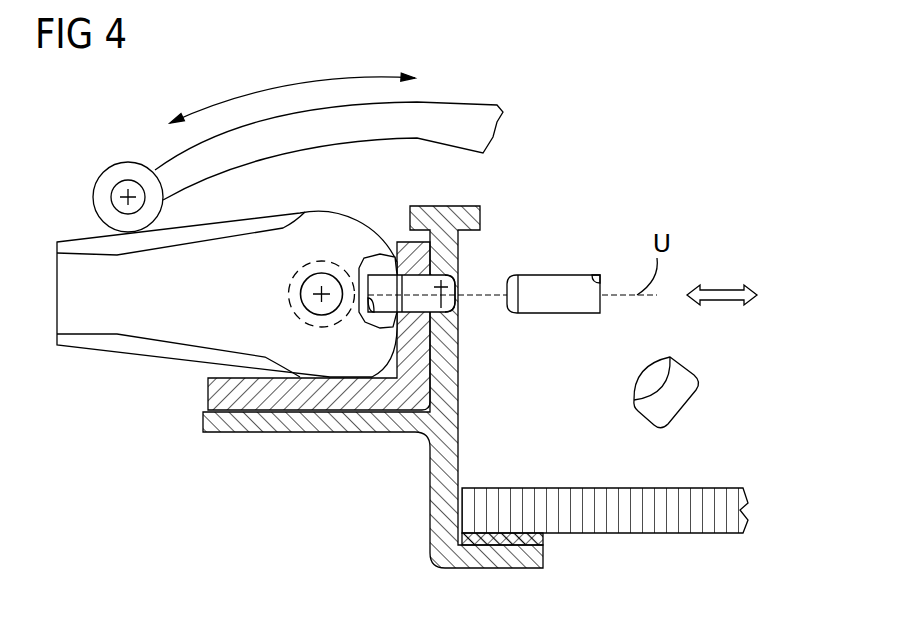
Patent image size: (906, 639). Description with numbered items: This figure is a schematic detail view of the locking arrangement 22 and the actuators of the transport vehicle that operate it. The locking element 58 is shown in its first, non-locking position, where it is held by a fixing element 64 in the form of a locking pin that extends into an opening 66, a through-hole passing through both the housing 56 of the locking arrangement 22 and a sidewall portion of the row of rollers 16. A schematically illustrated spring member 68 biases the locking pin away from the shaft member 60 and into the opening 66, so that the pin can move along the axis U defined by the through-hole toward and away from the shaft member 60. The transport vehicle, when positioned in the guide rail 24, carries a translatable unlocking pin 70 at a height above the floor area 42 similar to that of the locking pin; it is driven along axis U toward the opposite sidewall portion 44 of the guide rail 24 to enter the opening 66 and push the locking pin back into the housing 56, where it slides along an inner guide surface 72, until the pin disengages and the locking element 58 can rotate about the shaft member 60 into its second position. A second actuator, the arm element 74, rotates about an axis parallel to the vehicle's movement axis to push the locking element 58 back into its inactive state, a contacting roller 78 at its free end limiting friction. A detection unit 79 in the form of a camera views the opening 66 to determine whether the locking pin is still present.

The row of rollers 16 is at (450, 367).
The locking arrangement 22 is at (266, 271).
The guide rail 24 is at (632, 497).
The floor area 42 is at (665, 520).
The sidewall portion 44 is at (458, 457).
The housing 56 is at (210, 395).
The locking element 58 is at (100, 327).
The shaft member 60 is at (230, 422).
The fixing element 64 is at (457, 280).
The opening 66 is at (457, 313).
The spring member 68 is at (322, 327).
The unlocking pin 70 is at (558, 275).
The inner guide surface 72 is at (357, 377).
The arm element 74 is at (450, 113).
The contacting roller 78 is at (122, 175).
The detection unit 79 is at (685, 372).